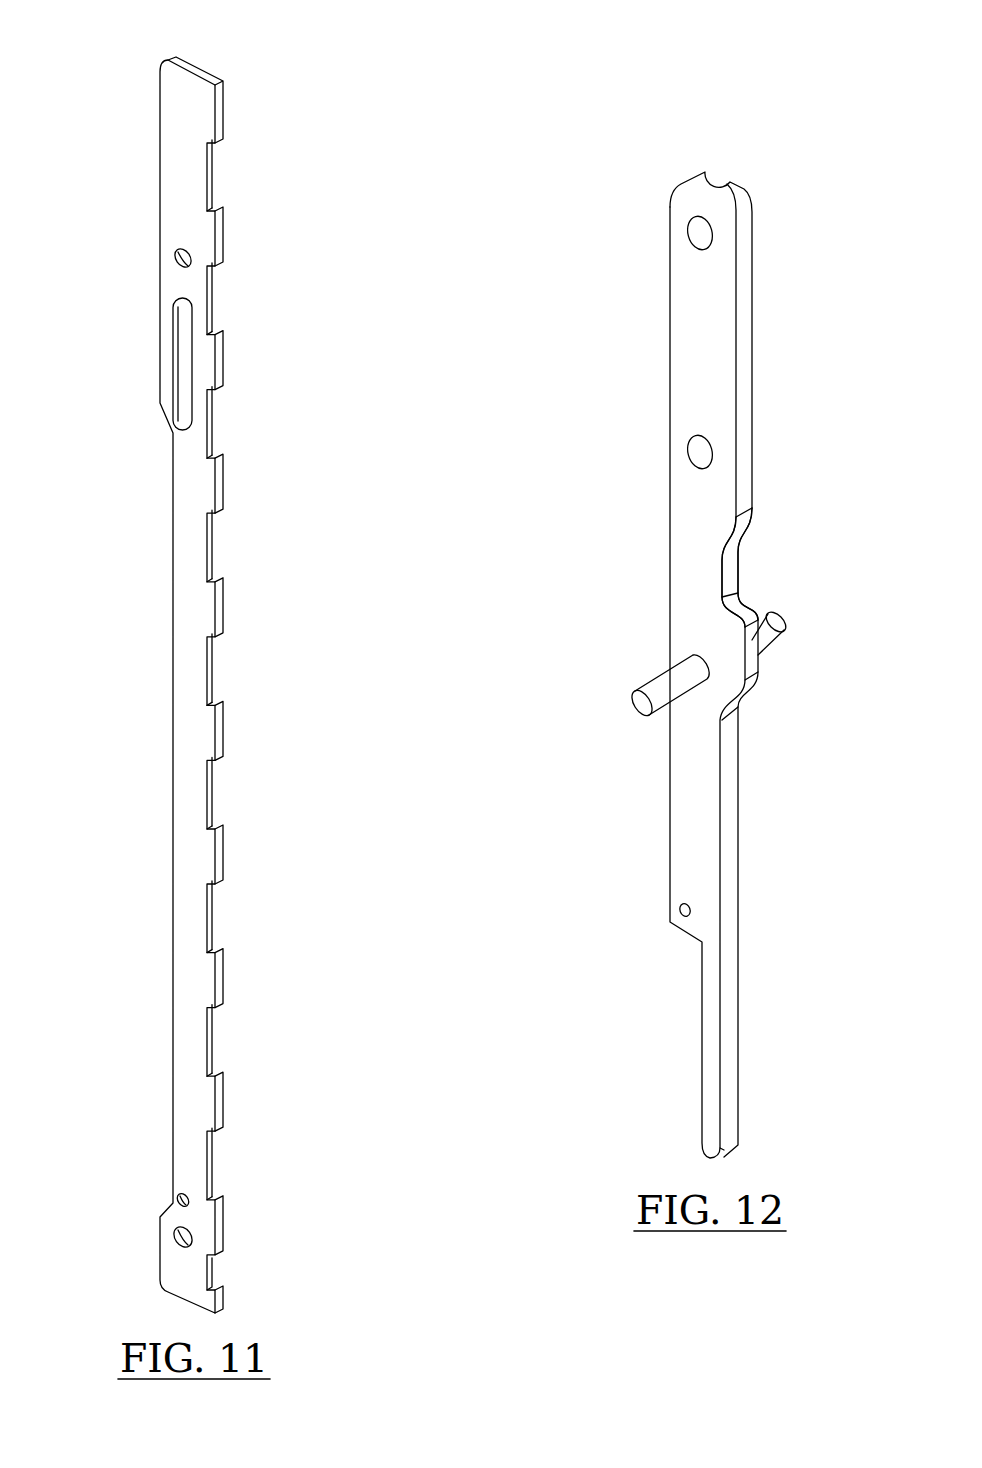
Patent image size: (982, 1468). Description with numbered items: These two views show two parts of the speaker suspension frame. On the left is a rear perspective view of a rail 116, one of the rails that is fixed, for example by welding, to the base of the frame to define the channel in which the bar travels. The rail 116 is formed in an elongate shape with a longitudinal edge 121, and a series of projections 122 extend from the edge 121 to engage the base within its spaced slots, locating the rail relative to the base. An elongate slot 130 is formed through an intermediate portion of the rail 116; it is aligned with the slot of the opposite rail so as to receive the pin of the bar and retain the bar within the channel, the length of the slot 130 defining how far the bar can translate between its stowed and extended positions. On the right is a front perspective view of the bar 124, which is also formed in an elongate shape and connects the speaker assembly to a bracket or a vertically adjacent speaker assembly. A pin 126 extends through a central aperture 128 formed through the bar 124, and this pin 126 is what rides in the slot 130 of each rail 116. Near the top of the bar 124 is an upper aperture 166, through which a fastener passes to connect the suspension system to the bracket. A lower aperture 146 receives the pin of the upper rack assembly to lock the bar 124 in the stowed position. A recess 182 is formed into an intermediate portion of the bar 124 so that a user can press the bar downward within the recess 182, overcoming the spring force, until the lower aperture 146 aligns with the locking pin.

In FIG. 11, the rail 116 is at (216, 46).
In FIG. 11, the longitudinal edge 121 is at (218, 413).
In FIG. 11, the projections 122 is at (226, 354).
In FIG. 11, the slot 130 is at (173, 343).
In FIG. 12, the bar 124 is at (735, 163).
In FIG. 12, the upper aperture 166 is at (688, 228).
In FIG. 12, the lower aperture 146 is at (688, 448).
In FIG. 12, the recess 182 is at (752, 588).
In FIG. 12, the pin 126 is at (652, 672).
In FIG. 12, the central aperture 128 is at (745, 667).